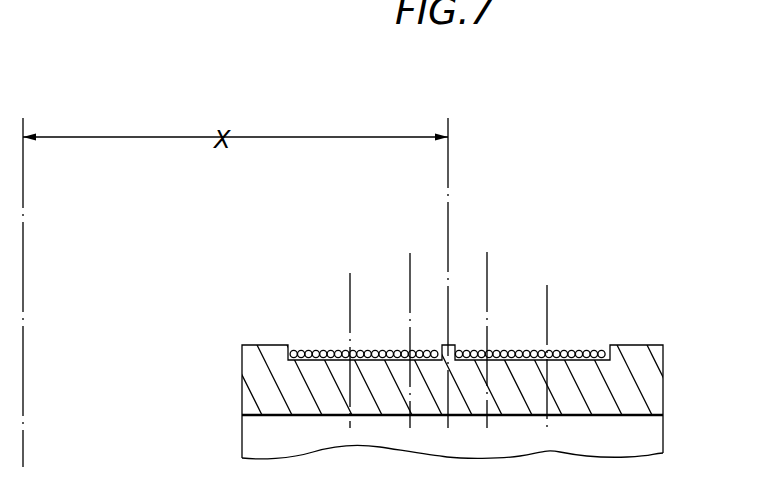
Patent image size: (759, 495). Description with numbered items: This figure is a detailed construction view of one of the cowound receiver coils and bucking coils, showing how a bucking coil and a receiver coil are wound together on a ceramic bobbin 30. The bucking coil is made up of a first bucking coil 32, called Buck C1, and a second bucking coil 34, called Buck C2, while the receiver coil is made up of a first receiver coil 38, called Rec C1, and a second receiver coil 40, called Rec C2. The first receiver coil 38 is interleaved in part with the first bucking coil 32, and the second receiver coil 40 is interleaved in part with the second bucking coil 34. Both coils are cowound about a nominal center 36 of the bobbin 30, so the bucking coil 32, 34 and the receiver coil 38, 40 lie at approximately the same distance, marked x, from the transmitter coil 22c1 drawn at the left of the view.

The transmitter coil 22c1 is at (23, 448).
The bobbin 30 is at (242, 360).
The first bucking coil 32 is at (410, 262).
The second bucking coil 34 is at (487, 264).
The nominal center 36 is at (448, 127).
The first receiver coil 38 is at (348, 283).
The second receiver coil 40 is at (547, 293).